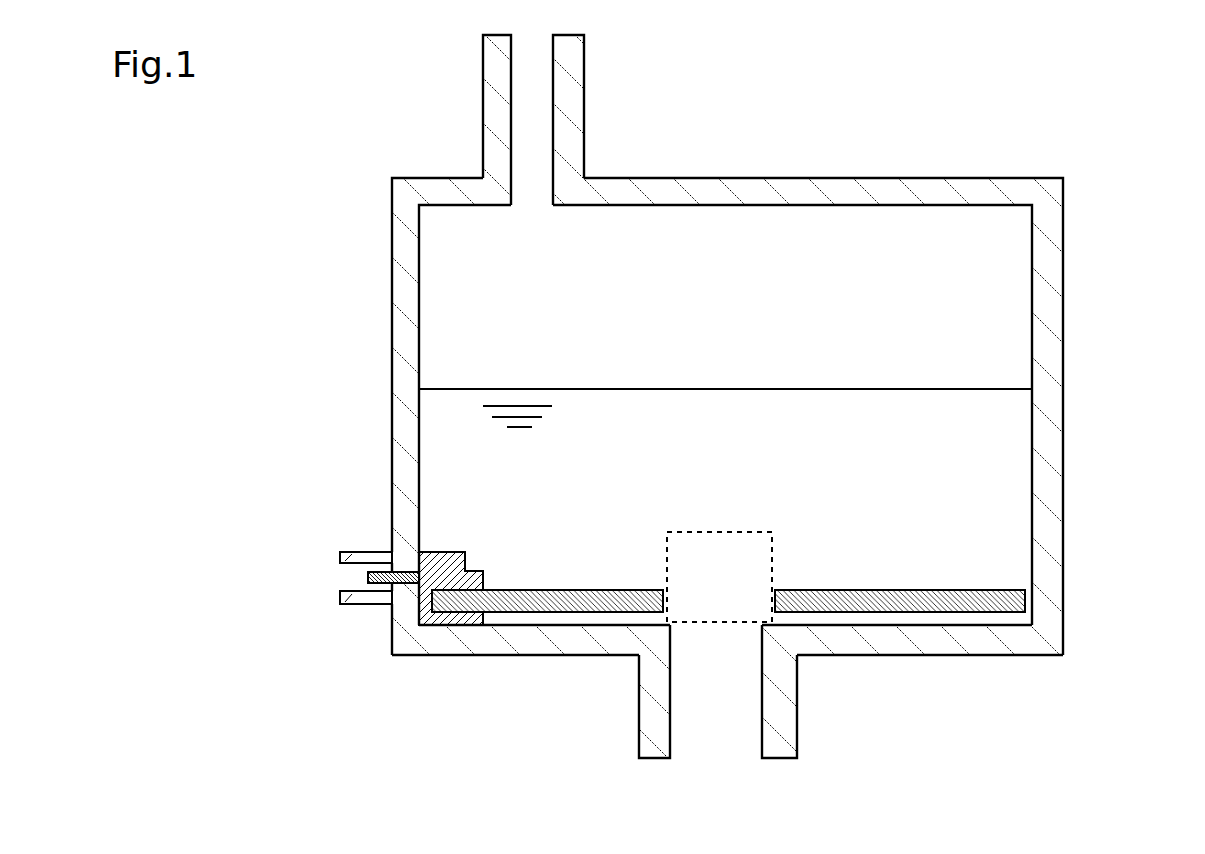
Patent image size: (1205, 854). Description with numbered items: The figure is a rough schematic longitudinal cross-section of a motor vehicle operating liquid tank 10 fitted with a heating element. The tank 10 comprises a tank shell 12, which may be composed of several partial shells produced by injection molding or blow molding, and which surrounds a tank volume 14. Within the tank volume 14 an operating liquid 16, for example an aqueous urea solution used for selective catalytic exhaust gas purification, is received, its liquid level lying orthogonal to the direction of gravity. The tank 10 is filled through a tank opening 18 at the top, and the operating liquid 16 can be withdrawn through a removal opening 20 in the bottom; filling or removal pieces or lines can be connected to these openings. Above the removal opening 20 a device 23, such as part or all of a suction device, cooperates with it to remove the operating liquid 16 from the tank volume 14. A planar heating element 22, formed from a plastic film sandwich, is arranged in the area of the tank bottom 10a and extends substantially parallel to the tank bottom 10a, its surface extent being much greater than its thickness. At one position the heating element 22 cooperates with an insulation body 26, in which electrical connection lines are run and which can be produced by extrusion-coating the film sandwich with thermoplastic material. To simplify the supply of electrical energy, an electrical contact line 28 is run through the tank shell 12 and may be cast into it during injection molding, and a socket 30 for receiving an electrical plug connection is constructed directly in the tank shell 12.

The motor vehicle operating liquid tank 10 is at (794, 396).
The tank bottom 10a is at (895, 640).
The tank shell 12 is at (1052, 480).
The tank volume 14 is at (838, 335).
The operating liquid 16 is at (622, 422).
The tank opening 18 is at (532, 203).
The removal opening 20 is at (731, 688).
The planar heating element 22 is at (840, 600).
The device 23 is at (731, 584).
The insulation body 26 is at (453, 562).
The electrical contact line 28 is at (367, 577).
The socket 30 is at (343, 553).